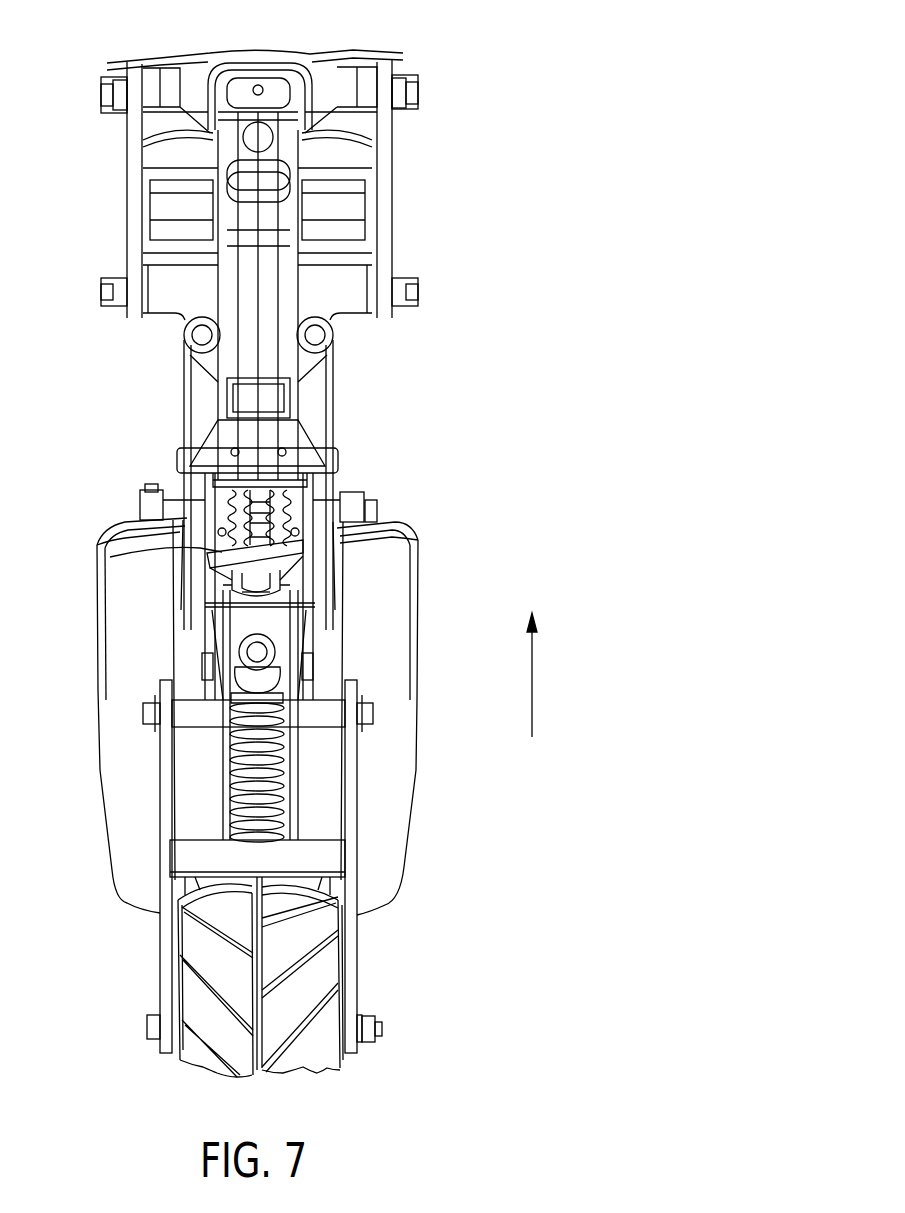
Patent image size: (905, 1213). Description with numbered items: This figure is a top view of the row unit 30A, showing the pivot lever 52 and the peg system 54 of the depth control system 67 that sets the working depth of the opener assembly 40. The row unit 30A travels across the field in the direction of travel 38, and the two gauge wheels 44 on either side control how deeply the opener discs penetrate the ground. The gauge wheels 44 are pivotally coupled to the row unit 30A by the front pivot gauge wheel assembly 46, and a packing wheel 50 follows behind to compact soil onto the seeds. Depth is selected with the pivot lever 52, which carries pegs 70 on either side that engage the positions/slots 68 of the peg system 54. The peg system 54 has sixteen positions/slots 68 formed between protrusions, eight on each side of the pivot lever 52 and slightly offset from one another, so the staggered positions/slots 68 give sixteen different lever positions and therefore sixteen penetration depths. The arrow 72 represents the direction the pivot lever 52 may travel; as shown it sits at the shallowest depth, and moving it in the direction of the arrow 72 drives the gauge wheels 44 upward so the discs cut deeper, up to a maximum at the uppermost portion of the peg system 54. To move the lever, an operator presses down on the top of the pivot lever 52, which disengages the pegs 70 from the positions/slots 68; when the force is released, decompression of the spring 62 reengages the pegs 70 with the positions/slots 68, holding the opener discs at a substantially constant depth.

The row unit 30A is at (508, 126).
The direction of travel 38 is at (532, 683).
The opener assembly 40 is at (433, 530).
The gauge wheels 44 is at (97, 748).
The front pivot gauge wheel assembly 46 is at (97, 542).
The packing wheel 50 is at (203, 960).
The pivot lever 52 is at (297, 567).
The peg system 54 is at (187, 512).
The spring 62 is at (287, 593).
The depth control system 67 is at (197, 547).
The positions/slots 68 is at (300, 548).
The pegs 70 is at (293, 580).
The arrow 72 is at (186, 461).